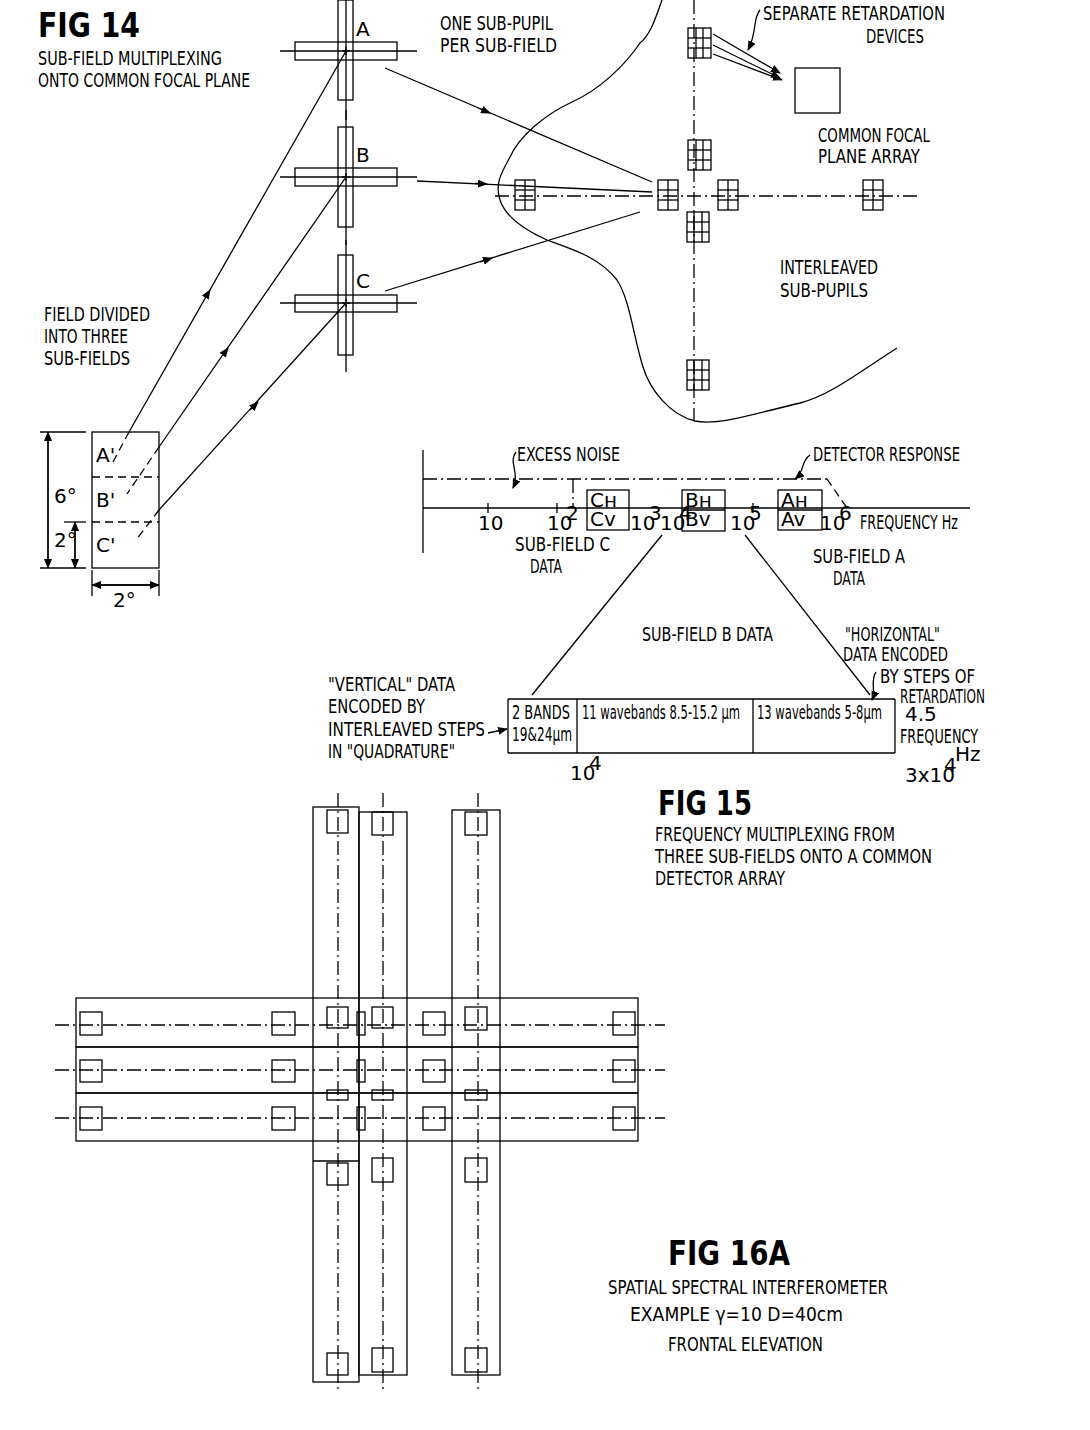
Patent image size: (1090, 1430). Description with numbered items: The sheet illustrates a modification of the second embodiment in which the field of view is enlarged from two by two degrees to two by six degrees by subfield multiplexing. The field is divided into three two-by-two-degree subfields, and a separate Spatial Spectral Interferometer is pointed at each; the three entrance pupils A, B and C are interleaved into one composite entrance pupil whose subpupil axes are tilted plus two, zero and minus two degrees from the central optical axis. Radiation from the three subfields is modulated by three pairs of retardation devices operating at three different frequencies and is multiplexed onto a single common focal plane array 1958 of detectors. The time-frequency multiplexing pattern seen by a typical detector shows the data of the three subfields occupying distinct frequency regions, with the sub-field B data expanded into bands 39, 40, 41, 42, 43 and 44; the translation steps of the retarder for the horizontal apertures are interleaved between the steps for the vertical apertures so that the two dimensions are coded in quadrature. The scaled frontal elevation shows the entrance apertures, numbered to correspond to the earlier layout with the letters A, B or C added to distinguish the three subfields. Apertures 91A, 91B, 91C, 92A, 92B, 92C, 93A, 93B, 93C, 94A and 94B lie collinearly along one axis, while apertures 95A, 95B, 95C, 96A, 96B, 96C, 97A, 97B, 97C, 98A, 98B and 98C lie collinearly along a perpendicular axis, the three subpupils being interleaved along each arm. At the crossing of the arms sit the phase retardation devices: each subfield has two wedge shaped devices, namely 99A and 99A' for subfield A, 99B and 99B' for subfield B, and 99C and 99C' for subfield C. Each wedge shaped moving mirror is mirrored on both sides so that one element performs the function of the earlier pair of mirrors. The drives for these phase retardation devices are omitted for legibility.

In FIG. 14, the common focal plane array 1958 is at (814, 153).
In FIG. 15, the frequency band 2 bands 19 and 24 um 39 is at (531, 686).
In FIG. 15, the frequency band boundary 40 is at (597, 686).
In FIG. 15, the frequency band 11 wavebands 8.5-15.2 um 41 is at (665, 686).
In FIG. 15, the frequency band boundary 42 is at (735, 686).
In FIG. 15, the frequency band 13 wavebands 5-8 um 43 is at (802, 686).
In FIG. 15, the frequency band boundary 44 is at (865, 686).
In FIG. 16A, the entrance aperture 91A is at (393, 822).
In FIG. 16A, the entrance aperture 91B is at (327, 820).
In FIG. 16A, the entrance aperture 91C is at (487, 823).
In FIG. 16A, the entrance aperture 92A is at (382, 1007).
In FIG. 16A, the entrance aperture 92B is at (336, 1007).
In FIG. 16A, the entrance aperture 92C is at (474, 1007).
In FIG. 16A, the entrance aperture 93A is at (393, 1165).
In FIG. 16A, the entrance aperture 93B is at (327, 1168).
In FIG. 16A, the entrance aperture 93C is at (487, 1165).
In FIG. 16A, the entrance aperture 94A is at (393, 1360).
In FIG. 16A, the entrance aperture 94B is at (327, 1364).
In FIG. 16A, the entrance aperture 95A is at (102, 1066).
In FIG. 16A, the entrance aperture 95B is at (102, 1019).
In FIG. 16A, the entrance aperture 95C is at (102, 1113).
In FIG. 16A, the entrance aperture 96A is at (272, 1066).
In FIG. 16A, the entrance aperture 96B is at (272, 1020).
In FIG. 16A, the entrance aperture 96C is at (272, 1114).
In FIG. 16A, the entrance aperture 97A is at (445, 1080).
In FIG. 16A, the entrance aperture 97B is at (432, 1012).
In FIG. 16A, the entrance aperture 97C is at (445, 1122).
In FIG. 16A, the entrance aperture 98A is at (635, 1068).
In FIG. 16A, the entrance aperture 98B is at (635, 1020).
In FIG. 16A, the entrance aperture 98C is at (635, 1124).
In FIG. 16A, the wedge shaped phase retardation device 99A is at (404, 1103).
In FIG. 16A, the wedge shaped phase retardation device 99B is at (336, 1116).
In FIG. 16A, the wedge shaped phase retardation device 99C is at (498, 1085).
In FIG. 16A, the wedge shaped phase retardation device 99A' is at (341, 1064).
In FIG. 16A, the wedge shaped phase retardation device 99B' is at (387, 1031).
In FIG. 16A, the wedge shaped phase retardation device 99C' is at (395, 1125).